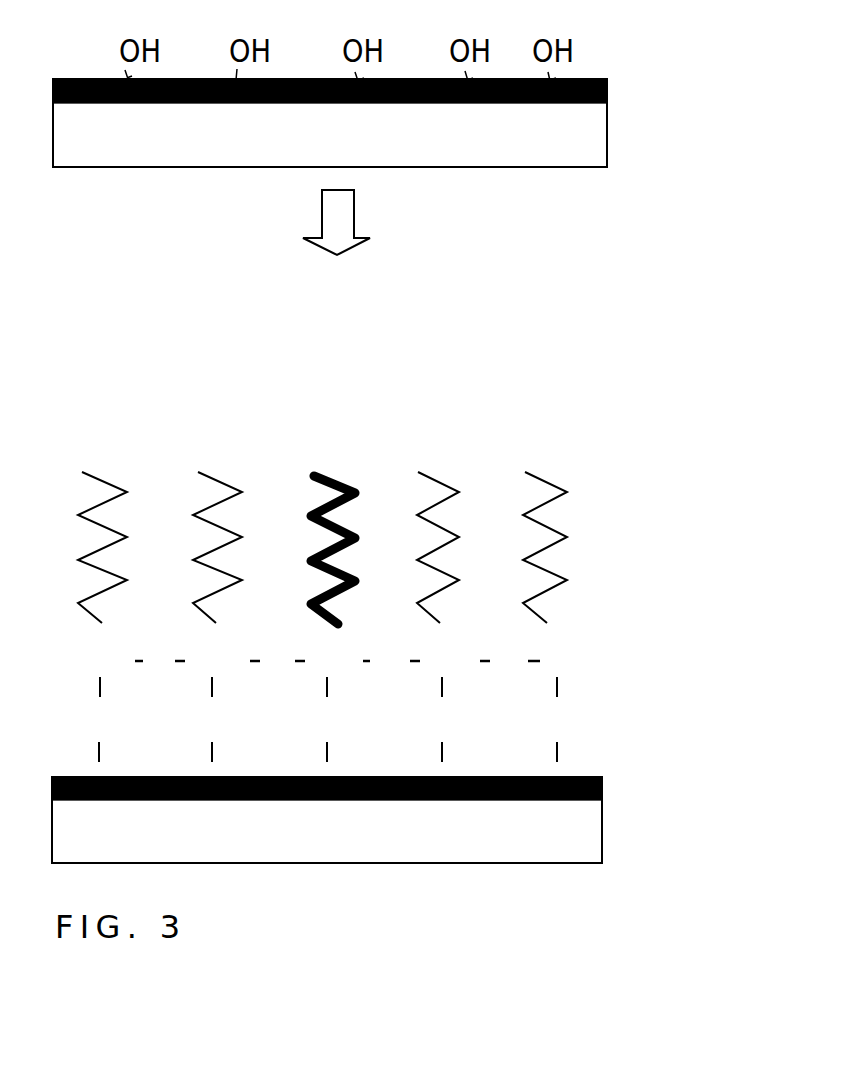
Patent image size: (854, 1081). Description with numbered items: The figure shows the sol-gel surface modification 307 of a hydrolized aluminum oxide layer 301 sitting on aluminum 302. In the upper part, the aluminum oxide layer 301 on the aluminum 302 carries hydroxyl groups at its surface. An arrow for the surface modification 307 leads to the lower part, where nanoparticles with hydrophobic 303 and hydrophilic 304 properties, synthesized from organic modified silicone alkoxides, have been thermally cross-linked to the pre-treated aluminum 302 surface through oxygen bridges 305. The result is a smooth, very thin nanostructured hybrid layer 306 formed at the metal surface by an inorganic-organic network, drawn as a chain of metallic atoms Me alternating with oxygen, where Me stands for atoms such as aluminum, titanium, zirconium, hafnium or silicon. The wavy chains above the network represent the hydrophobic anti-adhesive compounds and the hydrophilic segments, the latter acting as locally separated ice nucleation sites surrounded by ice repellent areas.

The hydrolized aluminum oxide layer 301 is at (608, 96).
The aluminum 302 is at (610, 145).
The hydrophobic nanoparticle 303 is at (350, 477).
The hydrophilic nanoparticle 304 is at (443, 475).
The oxygen bridge 305 is at (572, 703).
The nanostructured hybrid layer 306 is at (603, 655).
The surface modification 307 is at (355, 213).